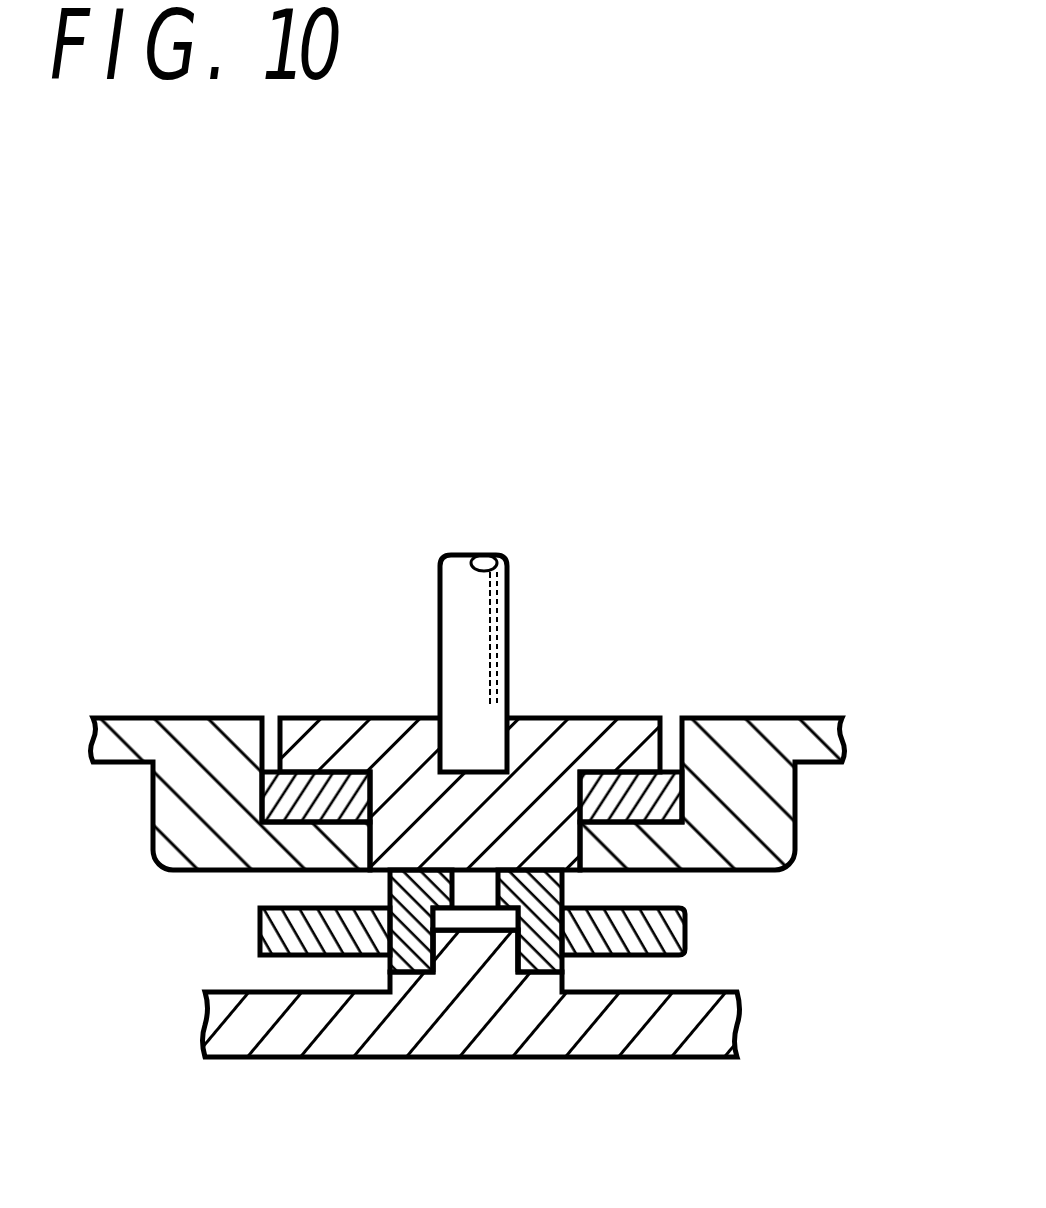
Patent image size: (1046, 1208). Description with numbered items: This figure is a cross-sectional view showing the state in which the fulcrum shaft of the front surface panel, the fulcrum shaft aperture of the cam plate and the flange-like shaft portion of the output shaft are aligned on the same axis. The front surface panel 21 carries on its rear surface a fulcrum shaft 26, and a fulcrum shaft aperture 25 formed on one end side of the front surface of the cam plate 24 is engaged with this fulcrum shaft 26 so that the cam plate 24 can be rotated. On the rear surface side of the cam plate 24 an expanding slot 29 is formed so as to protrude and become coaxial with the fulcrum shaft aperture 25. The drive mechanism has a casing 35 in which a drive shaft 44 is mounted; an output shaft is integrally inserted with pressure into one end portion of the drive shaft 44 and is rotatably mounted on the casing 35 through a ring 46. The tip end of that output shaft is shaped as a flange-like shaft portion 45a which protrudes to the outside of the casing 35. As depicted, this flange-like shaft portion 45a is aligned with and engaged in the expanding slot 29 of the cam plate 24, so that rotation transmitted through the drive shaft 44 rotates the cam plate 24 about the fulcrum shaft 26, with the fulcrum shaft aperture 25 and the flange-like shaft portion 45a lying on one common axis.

The front surface panel 21 is at (670, 1027).
The cam plate 24 is at (687, 927).
The fulcrum shaft aperture 25 is at (452, 950).
The fulcrum shaft 26 is at (476, 938).
The expanding slot 29 is at (462, 892).
The casing 35 is at (753, 823).
The drive shaft 44 is at (508, 585).
The flange-like shaft portion 45a is at (470, 893).
The ring 46 is at (315, 795).